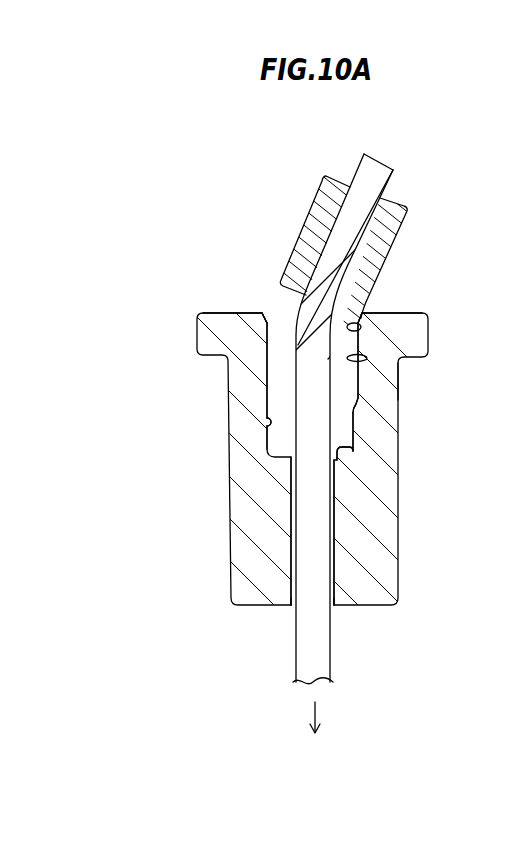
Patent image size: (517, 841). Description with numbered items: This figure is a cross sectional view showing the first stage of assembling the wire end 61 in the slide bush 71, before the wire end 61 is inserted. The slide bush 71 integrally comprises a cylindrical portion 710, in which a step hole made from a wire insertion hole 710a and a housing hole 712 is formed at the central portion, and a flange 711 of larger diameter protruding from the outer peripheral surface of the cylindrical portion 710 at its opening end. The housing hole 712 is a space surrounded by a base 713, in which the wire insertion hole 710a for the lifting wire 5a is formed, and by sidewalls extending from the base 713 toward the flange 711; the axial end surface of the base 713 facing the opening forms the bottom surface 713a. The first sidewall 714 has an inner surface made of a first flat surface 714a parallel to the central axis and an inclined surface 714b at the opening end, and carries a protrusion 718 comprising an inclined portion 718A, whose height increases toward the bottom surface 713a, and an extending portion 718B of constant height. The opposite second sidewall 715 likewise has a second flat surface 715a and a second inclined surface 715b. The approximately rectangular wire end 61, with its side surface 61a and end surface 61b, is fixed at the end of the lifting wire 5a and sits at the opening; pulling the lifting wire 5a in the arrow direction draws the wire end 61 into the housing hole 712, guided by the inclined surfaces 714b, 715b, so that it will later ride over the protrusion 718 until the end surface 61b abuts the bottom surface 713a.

The lifting wire 5a is at (373, 168).
The wire end 61 is at (358, 278).
The side surface 61a is at (394, 242).
The end surface 61b is at (361, 330).
The slide bush 71 is at (258, 459).
The cylindrical portion 710 is at (188, 368).
The wire insertion hole 710a is at (339, 610).
The flange 711 is at (188, 320).
The housing hole 712 is at (277, 307).
The base 713 is at (285, 468).
The bottom surface 713a is at (345, 450).
The first sidewall 714 is at (378, 382).
The first flat surface 714a is at (362, 358).
The inclined surface 714b is at (363, 322).
The second sidewall 715 is at (247, 408).
The second flat surface 715a is at (272, 430).
The second inclined surface 715b is at (263, 312).
The protrusion 718 is at (435, 419).
The inclined portion 718A is at (357, 407).
The extending portion 718B is at (355, 442).